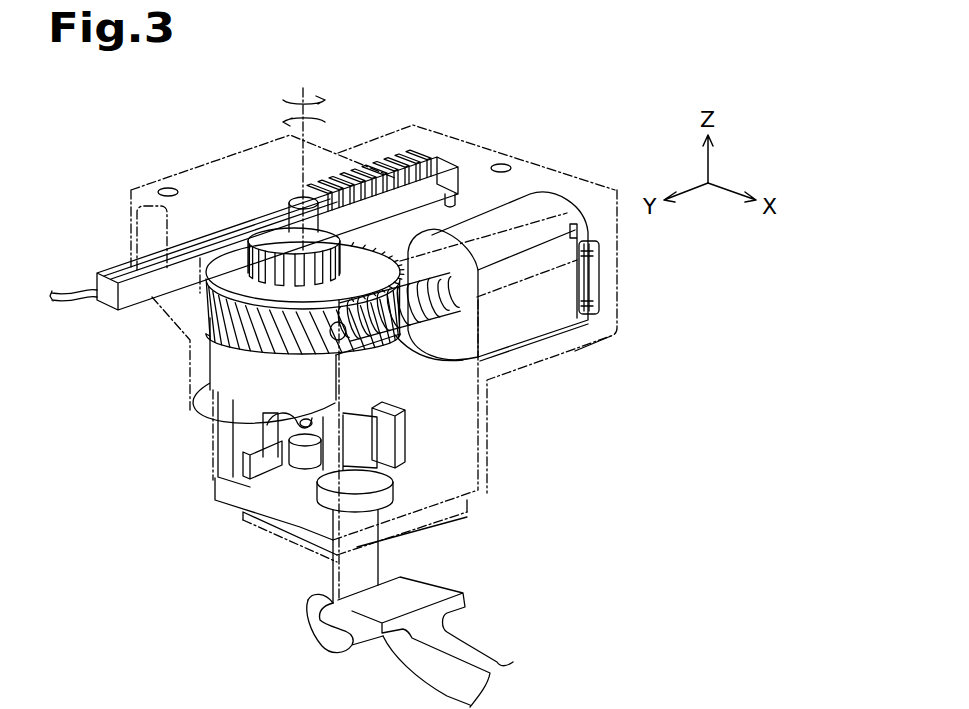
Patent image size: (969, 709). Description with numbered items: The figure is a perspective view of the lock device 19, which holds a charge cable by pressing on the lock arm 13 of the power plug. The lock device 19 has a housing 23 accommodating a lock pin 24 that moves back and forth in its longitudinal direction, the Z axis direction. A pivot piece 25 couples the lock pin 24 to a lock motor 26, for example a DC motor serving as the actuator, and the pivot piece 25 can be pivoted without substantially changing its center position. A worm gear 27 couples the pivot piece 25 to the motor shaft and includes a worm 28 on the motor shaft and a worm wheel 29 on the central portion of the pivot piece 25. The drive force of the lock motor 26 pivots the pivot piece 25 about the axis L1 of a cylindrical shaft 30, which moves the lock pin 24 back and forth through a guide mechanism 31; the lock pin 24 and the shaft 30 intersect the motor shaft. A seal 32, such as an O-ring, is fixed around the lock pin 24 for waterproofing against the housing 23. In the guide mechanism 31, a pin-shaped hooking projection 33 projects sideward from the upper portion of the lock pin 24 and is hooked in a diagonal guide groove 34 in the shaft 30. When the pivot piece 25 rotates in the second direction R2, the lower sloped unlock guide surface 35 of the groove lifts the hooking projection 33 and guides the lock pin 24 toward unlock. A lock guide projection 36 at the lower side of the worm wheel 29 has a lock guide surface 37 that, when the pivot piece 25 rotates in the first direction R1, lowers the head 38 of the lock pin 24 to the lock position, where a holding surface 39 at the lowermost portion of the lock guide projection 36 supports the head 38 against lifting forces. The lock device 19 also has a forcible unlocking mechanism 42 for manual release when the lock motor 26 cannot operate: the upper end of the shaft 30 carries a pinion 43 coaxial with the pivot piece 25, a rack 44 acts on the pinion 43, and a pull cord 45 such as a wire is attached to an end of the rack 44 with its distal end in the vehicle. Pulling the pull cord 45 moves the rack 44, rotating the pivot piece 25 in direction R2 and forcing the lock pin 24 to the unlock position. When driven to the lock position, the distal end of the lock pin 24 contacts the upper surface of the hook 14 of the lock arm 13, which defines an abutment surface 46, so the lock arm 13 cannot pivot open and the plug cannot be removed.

The lock arm 13 is at (473, 648).
The hook 14 is at (310, 620).
The lock device 19 is at (84, 146).
The housing 23 is at (380, 133).
The lock pin 24 is at (333, 562).
The pivot piece 25 is at (207, 350).
The lock motor 26 is at (541, 197).
The worm gear 27 is at (339, 354).
The worm 28 is at (457, 347).
The worm wheel 29 is at (320, 365).
The cylindrical shaft 30 is at (289, 202).
The guide mechanism 31 is at (229, 415).
The seal 32 is at (317, 497).
The hooking projection 33 is at (308, 420).
The guide groove 34 is at (290, 427).
The unlock guide surface 35 is at (287, 423).
The lock guide projection 36 is at (232, 375).
The lock guide surface 37 is at (297, 417).
The head 38 is at (350, 430).
The holding surface 39 is at (397, 433).
The forcible unlocking mechanism 42 is at (103, 248).
The pinion 43 is at (358, 251).
The rack 44 is at (323, 194).
The pull cord 45 is at (70, 307).
The abutment surface 46 is at (320, 591).
The axis L1 is at (303, 170).
The first direction R1 is at (325, 122).
The second direction R2 is at (325, 100).